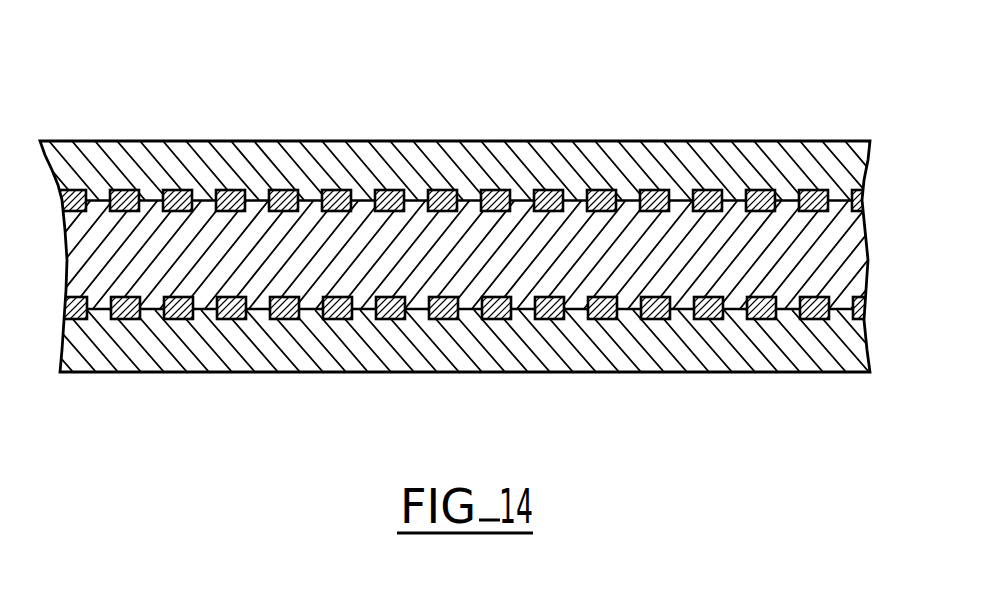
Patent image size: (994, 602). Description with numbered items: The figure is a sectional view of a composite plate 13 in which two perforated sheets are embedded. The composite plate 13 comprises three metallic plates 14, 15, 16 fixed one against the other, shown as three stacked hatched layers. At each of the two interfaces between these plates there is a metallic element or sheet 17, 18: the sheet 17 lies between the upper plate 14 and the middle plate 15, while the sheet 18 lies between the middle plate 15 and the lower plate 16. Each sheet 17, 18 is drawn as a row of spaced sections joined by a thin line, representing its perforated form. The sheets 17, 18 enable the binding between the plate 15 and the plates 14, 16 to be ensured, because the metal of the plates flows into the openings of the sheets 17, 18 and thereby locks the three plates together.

The composite plate 13 is at (480, 214).
The metallic plate 14 is at (695, 162).
The metallic plate 15 is at (817, 252).
The metallic plate 16 is at (716, 343).
The metallic sheet 17 is at (385, 190).
The metallic sheet 18 is at (387, 320).